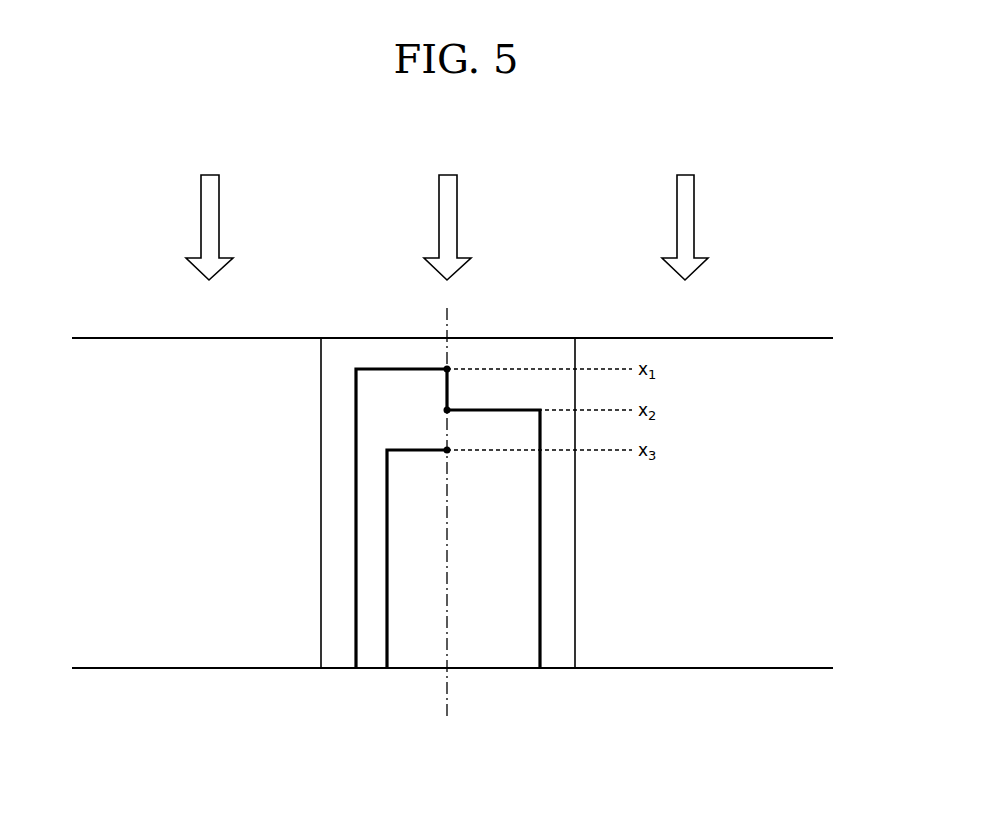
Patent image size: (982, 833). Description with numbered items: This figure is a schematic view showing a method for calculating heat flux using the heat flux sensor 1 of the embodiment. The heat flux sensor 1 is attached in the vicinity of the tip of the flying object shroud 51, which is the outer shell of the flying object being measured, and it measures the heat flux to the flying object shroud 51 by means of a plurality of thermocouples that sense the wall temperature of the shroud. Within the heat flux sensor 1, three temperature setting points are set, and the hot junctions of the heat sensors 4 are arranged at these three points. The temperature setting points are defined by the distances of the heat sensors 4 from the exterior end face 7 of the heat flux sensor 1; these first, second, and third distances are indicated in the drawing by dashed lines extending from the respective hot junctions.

The heat flux sensor 1 is at (332, 299).
The heat sensor 4 is at (447, 450).
The exterior end face 7 is at (375, 338).
The flying object shroud 51 is at (140, 360).